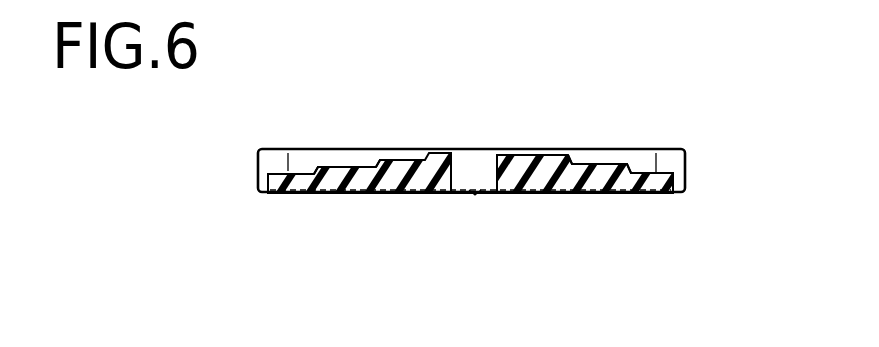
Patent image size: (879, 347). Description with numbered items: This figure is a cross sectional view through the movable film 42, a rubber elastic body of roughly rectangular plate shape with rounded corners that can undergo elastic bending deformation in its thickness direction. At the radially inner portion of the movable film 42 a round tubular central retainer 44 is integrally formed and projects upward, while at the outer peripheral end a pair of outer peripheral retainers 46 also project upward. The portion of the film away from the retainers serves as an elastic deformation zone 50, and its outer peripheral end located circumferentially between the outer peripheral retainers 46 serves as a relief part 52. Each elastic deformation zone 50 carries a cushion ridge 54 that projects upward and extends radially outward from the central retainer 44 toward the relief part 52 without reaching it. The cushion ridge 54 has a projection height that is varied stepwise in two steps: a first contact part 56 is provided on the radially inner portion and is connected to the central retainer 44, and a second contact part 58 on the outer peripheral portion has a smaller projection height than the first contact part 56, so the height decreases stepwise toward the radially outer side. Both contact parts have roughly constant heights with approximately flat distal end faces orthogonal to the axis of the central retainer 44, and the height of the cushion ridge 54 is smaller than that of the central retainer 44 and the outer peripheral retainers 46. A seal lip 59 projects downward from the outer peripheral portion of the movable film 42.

The movable film 42 is at (697, 115).
The central retainer 44 is at (511, 160).
The outer peripheral retainer 46 is at (641, 160).
The elastic deformation zone 50 is at (320, 196).
The relief part 52 is at (268, 181).
The cushion ridge 54 is at (407, 87).
The first contact part 56 is at (402, 170).
The second contact part 58 is at (336, 168).
The seal lip 59 is at (421, 195).